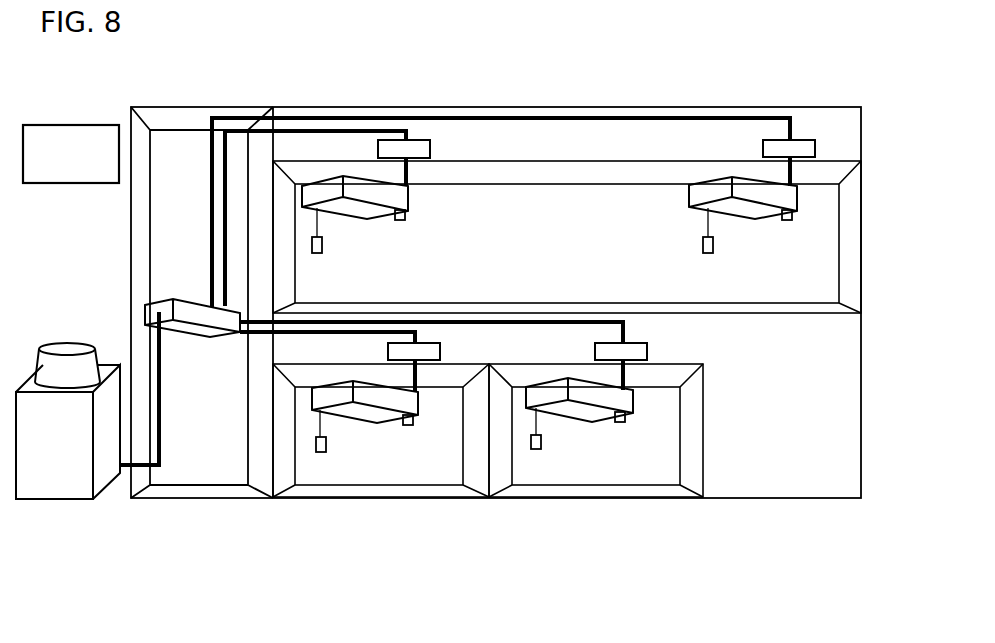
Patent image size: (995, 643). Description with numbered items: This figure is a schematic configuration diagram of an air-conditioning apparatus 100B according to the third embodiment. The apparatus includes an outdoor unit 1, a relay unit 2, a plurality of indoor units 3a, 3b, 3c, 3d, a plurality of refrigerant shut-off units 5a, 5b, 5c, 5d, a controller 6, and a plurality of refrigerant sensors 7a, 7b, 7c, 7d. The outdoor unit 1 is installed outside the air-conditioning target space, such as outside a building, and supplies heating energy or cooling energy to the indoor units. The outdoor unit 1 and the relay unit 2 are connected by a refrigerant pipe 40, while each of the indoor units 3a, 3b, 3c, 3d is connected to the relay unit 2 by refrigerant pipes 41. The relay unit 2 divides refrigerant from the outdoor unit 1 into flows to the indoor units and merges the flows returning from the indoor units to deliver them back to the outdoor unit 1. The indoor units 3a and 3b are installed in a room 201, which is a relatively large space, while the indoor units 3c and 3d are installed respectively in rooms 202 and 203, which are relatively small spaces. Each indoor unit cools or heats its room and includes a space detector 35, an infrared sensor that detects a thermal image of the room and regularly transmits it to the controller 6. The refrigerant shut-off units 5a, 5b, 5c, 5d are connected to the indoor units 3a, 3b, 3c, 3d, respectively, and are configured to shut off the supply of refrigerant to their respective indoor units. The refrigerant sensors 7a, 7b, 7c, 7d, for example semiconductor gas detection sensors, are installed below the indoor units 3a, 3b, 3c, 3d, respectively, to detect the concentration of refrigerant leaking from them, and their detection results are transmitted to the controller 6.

The outdoor unit 1 is at (53, 342).
The relay unit 2 is at (163, 297).
The indoor unit 3a is at (358, 220).
The indoor unit 3b is at (747, 220).
The indoor unit 3c is at (362, 424).
The indoor unit 3d is at (578, 422).
The refrigerant shut-off unit 5a is at (432, 148).
The refrigerant shut-off unit 5b is at (761, 145).
The refrigerant shut-off unit 5c is at (442, 350).
The refrigerant shut-off unit 5d is at (649, 350).
The controller 6 is at (52, 124).
The refrigerant sensor 7a is at (318, 255).
The refrigerant sensor 7b is at (709, 255).
The refrigerant sensor 7c is at (322, 453).
The refrigerant sensor 7d is at (537, 450).
The space detector 35 is at (400, 222).
The refrigerant pipe 40 is at (160, 405).
The refrigerant pipes 41 is at (477, 117).
The room 201 is at (827, 252).
The room 202 is at (441, 470).
The room 203 is at (662, 470).
The air-conditioning apparatus 100B is at (502, 607).